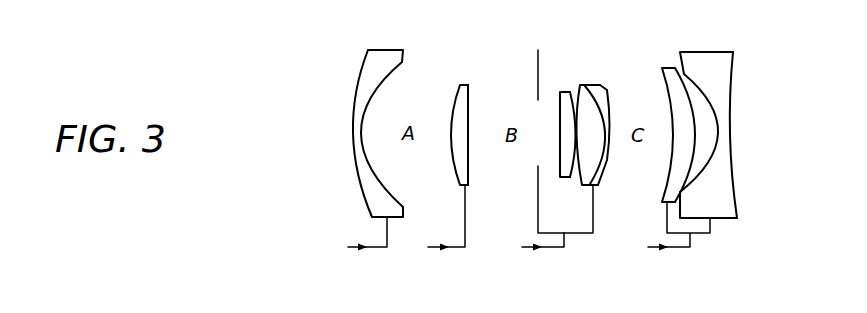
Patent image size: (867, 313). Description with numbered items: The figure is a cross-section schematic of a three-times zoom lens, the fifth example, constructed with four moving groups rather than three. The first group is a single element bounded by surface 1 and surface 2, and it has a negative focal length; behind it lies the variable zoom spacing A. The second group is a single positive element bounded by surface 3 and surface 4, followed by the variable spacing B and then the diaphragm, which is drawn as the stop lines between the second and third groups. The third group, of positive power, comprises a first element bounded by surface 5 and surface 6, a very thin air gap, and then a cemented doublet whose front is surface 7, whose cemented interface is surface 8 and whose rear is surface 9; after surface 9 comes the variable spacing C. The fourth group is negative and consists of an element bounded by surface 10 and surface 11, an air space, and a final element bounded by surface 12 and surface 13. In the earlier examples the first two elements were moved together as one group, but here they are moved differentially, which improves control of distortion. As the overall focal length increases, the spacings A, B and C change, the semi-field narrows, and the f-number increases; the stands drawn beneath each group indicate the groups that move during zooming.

The surface 1 is at (357, 85).
The surface 2 is at (390, 87).
The surface 3 is at (450, 113).
The surface 4 is at (470, 112).
The surface 5 is at (557, 123).
The surface 6 is at (578, 163).
The surface 7 is at (575, 98).
The surface 8 is at (606, 161).
The surface 9 is at (607, 100).
The surface 10 is at (667, 101).
The surface 11 is at (692, 162).
The surface 12 is at (706, 100).
The surface 13 is at (733, 80).